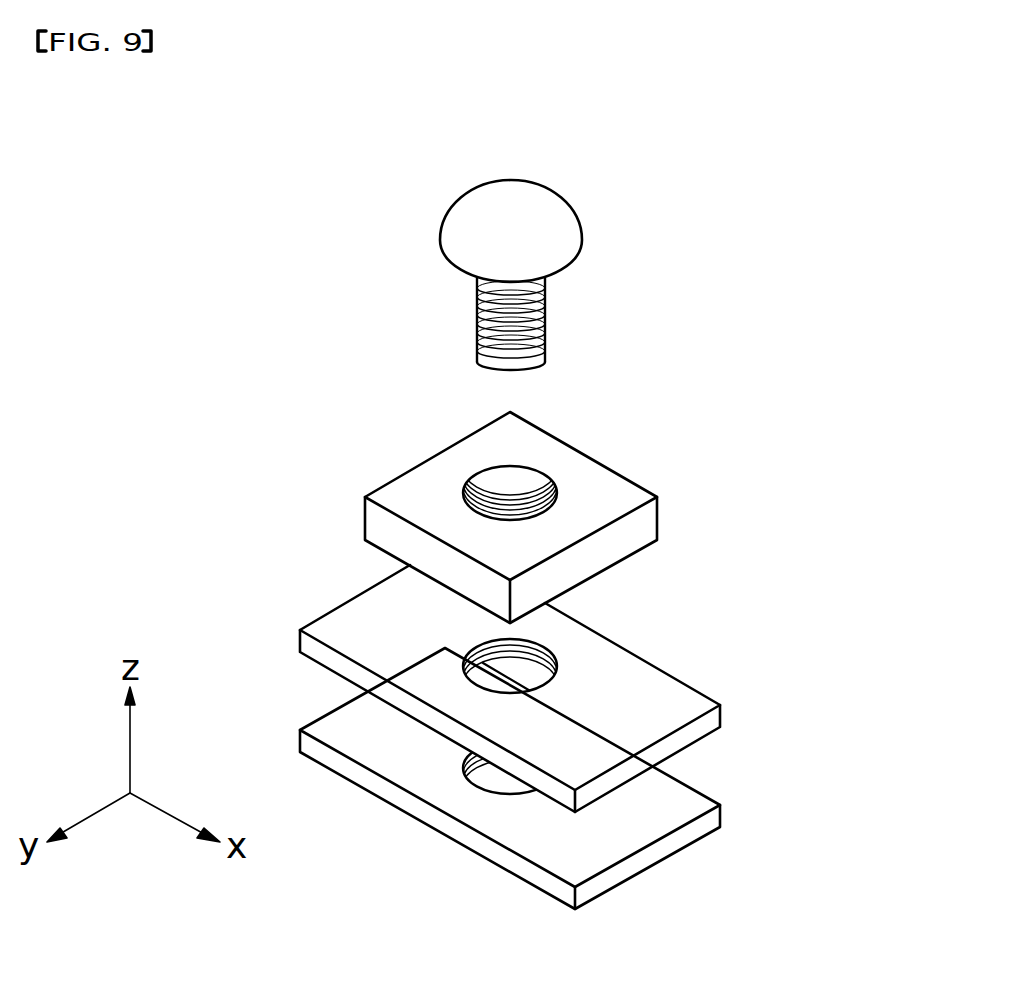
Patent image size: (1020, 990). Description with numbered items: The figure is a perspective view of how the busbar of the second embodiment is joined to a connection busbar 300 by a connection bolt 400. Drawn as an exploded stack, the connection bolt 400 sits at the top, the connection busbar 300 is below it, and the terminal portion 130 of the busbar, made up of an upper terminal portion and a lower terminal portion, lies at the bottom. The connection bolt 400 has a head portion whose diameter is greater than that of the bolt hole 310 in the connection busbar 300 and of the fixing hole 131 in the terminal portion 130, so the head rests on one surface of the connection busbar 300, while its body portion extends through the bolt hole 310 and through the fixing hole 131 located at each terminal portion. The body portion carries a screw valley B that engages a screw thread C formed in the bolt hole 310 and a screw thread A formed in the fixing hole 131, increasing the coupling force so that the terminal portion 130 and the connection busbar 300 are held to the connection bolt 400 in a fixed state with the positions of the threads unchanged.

The connection bolt 400 is at (483, 215).
The screw valley B is at (478, 325).
The connection busbar 300 is at (571, 506).
The bolt hole 310 is at (496, 455).
The screw thread C is at (487, 497).
The terminal portion 130 is at (604, 737).
The fixing hole 131 is at (487, 629).
The screw thread A is at (473, 657).